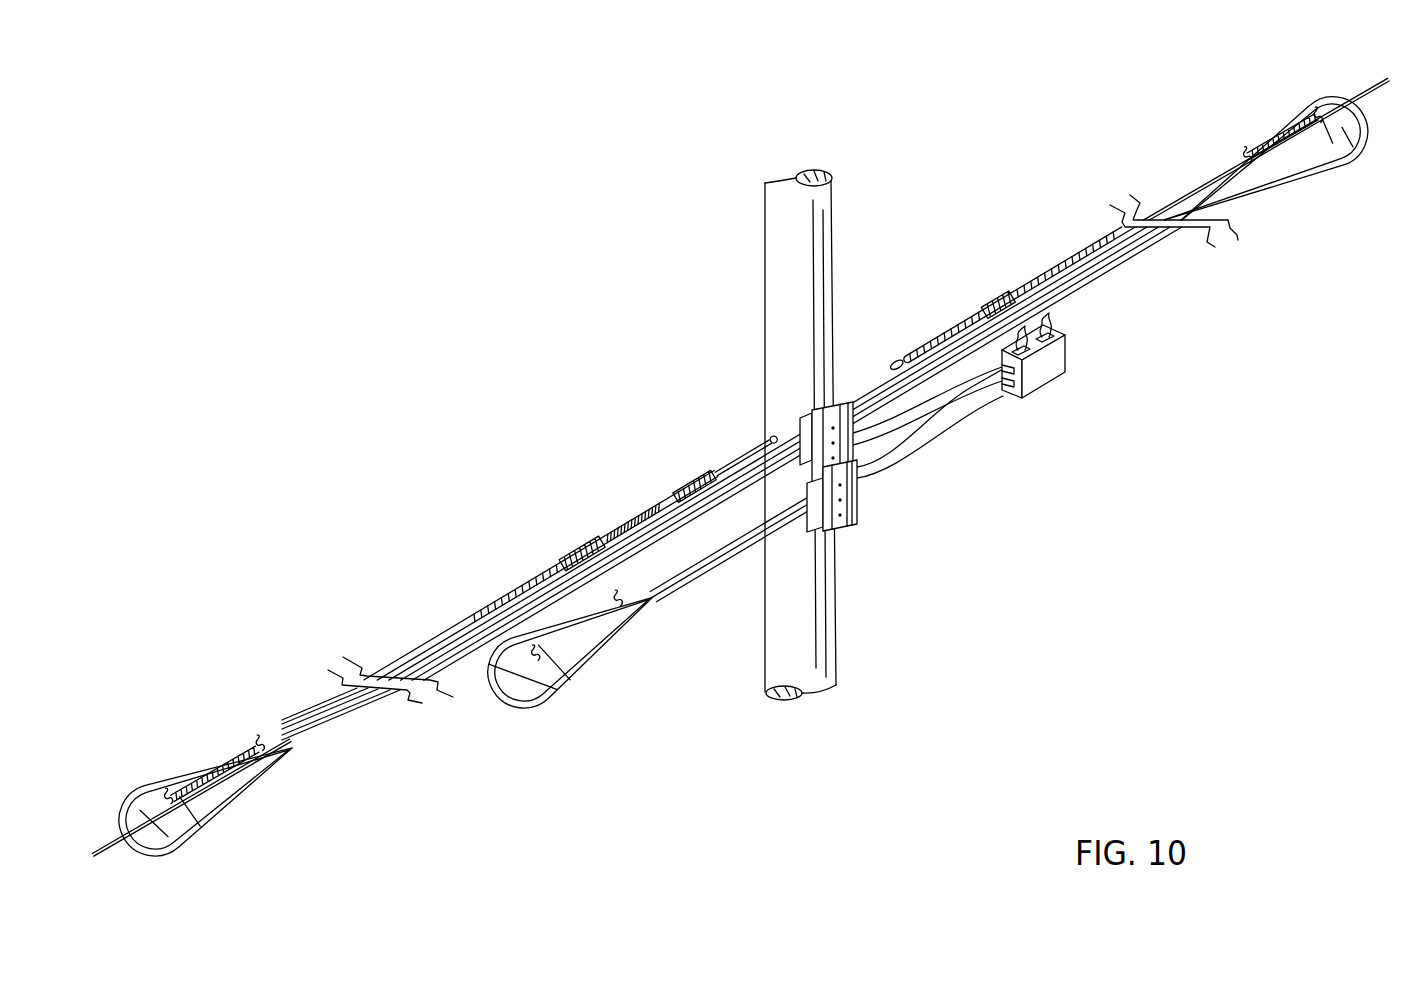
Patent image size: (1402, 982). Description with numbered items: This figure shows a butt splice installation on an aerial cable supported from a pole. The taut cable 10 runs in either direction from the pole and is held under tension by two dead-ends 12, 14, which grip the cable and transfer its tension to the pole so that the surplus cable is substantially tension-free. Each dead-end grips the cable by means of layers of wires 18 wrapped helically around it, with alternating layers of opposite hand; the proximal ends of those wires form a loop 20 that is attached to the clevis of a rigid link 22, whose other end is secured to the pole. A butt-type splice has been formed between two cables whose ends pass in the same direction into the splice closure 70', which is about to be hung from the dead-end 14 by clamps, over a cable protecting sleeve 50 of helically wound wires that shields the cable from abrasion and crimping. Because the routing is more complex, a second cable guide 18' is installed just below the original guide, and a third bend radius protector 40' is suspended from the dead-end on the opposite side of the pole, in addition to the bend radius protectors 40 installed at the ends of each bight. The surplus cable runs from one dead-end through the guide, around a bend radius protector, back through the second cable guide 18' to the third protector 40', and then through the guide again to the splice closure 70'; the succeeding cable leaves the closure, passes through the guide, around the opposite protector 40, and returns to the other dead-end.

The taut cable 10 is at (1165, 203).
The dead-end 12 is at (648, 503).
The dead-end 14 is at (926, 338).
The wires 18 is at (591, 531).
The second cable guide 18' is at (897, 513).
The loop 20 is at (695, 484).
The rigid link 22 is at (747, 456).
The bend radius protector 40 is at (739, 475).
The third bend radius protector 40' is at (644, 624).
The cable protecting sleeve 50 is at (230, 775).
The splice closure 70' is at (1074, 386).